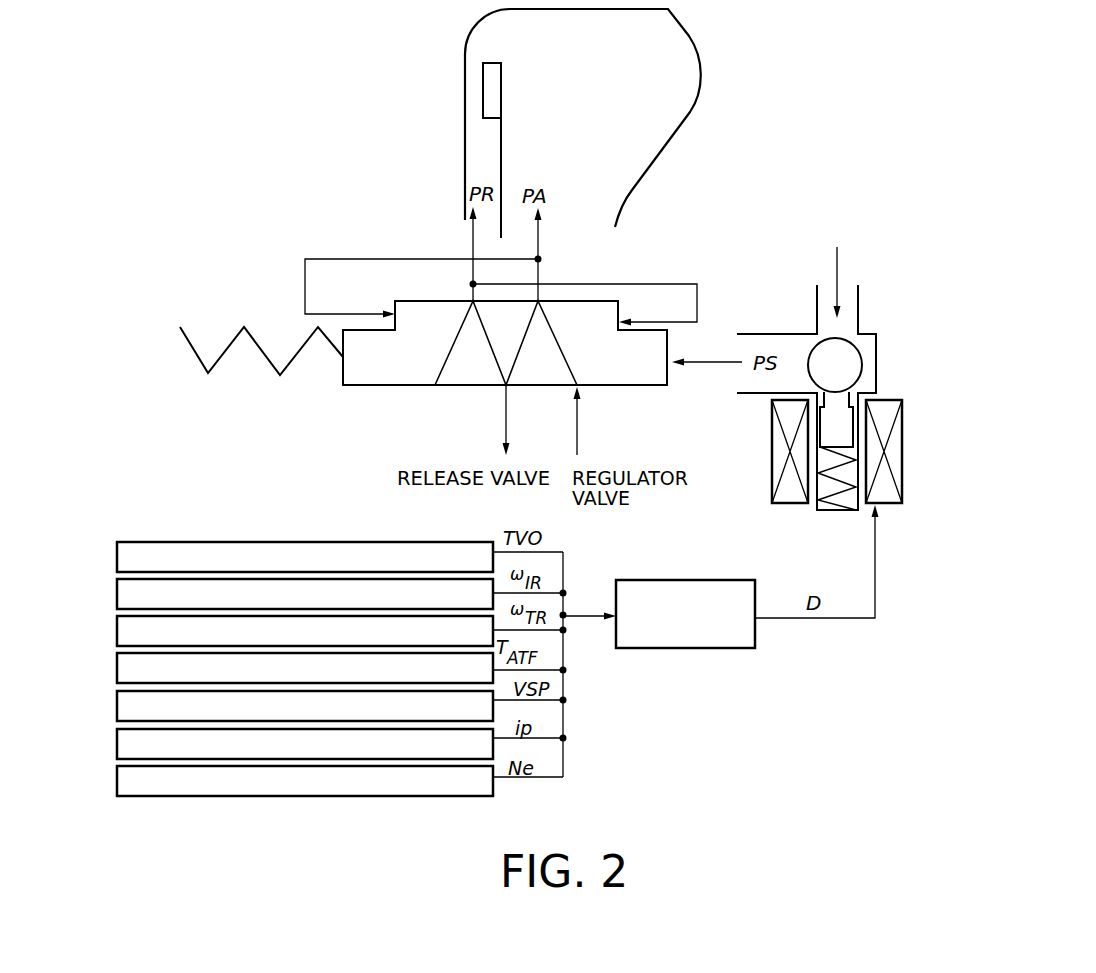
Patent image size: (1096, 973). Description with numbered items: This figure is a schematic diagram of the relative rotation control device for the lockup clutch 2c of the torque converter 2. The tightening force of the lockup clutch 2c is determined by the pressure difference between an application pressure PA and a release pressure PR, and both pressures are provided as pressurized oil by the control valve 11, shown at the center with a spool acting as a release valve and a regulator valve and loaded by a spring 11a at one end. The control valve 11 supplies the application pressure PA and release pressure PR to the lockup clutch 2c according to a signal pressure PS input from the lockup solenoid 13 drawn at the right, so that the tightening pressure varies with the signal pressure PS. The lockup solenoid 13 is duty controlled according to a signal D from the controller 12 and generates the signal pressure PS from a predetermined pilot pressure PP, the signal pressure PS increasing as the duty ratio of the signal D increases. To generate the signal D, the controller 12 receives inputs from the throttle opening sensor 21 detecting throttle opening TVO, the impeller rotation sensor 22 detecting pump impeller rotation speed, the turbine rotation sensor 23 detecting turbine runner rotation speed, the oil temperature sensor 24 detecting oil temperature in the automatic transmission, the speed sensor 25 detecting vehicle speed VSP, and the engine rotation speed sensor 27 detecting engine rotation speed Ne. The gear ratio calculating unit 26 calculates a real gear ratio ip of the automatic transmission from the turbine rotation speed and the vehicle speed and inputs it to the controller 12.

The torque converter 2 is at (693, 38).
The lockup clutch 2c is at (493, 92).
The control valve 11 is at (370, 388).
The spring 11a is at (267, 355).
The controller 12 is at (712, 580).
The lockup solenoid 13 is at (877, 363).
The throttle opening sensor 21 is at (117, 546).
The impeller rotation sensor 22 is at (117, 583).
The turbine rotation sensor 23 is at (117, 620).
The oil temperature sensor 24 is at (117, 658).
The speed sensor 25 is at (117, 696).
The gear ratio calculating unit 26 is at (117, 734).
The engine rotation speed sensor 27 is at (117, 771).